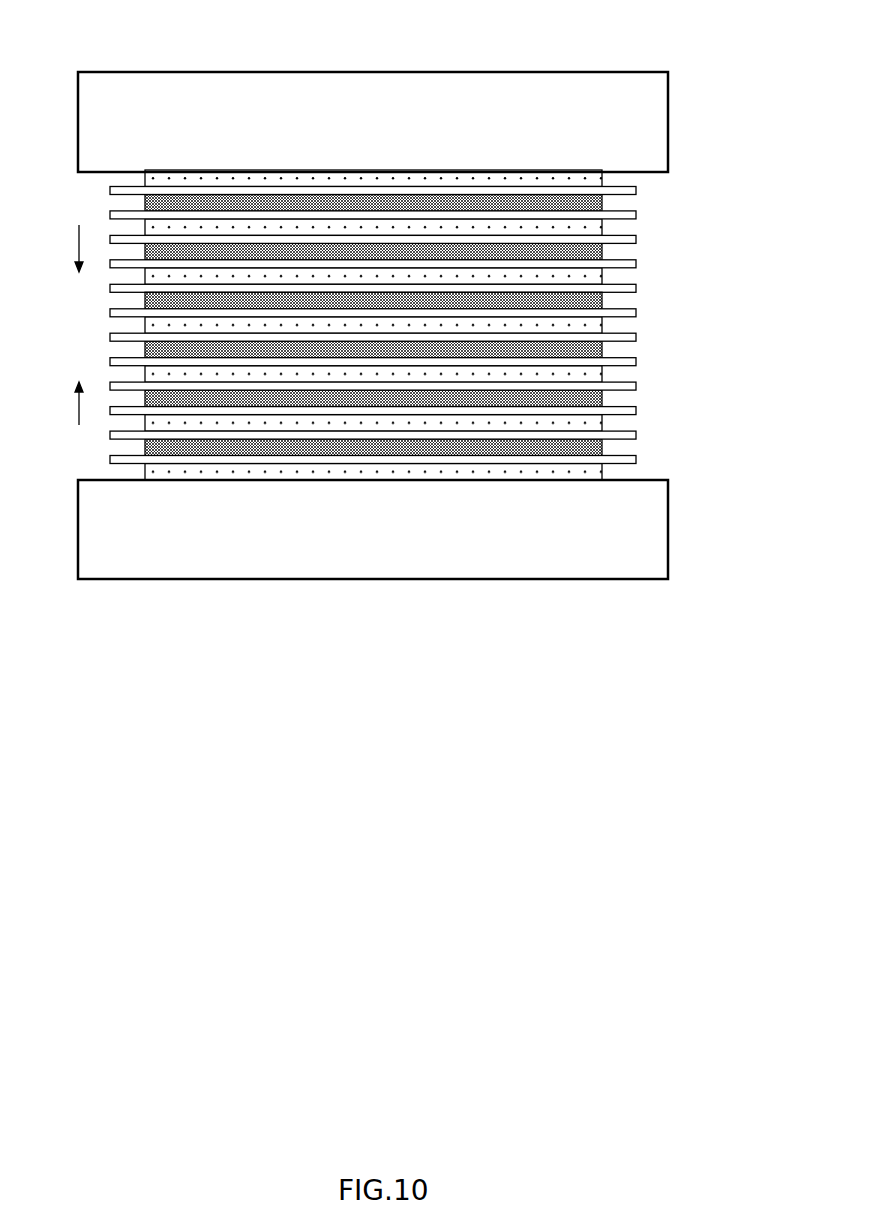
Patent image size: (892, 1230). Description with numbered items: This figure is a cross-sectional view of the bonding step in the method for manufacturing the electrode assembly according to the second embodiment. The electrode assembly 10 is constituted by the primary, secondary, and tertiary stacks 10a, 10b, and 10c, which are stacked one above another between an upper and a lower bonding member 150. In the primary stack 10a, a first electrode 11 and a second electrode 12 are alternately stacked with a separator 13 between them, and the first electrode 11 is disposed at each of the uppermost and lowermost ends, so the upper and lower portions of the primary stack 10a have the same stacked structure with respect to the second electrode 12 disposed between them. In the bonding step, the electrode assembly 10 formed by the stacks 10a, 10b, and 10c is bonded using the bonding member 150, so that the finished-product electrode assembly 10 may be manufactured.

The bonding member 150 is at (372, 72).
The electrode assembly 10 is at (442, 393).
The primary stack 10a is at (685, 292).
The secondary stack 10b is at (425, 487).
The tertiary stack 10c is at (685, 172).
The first electrode 11 is at (470, 447).
The second electrode 12 is at (569, 472).
The separator 13 is at (520, 463).